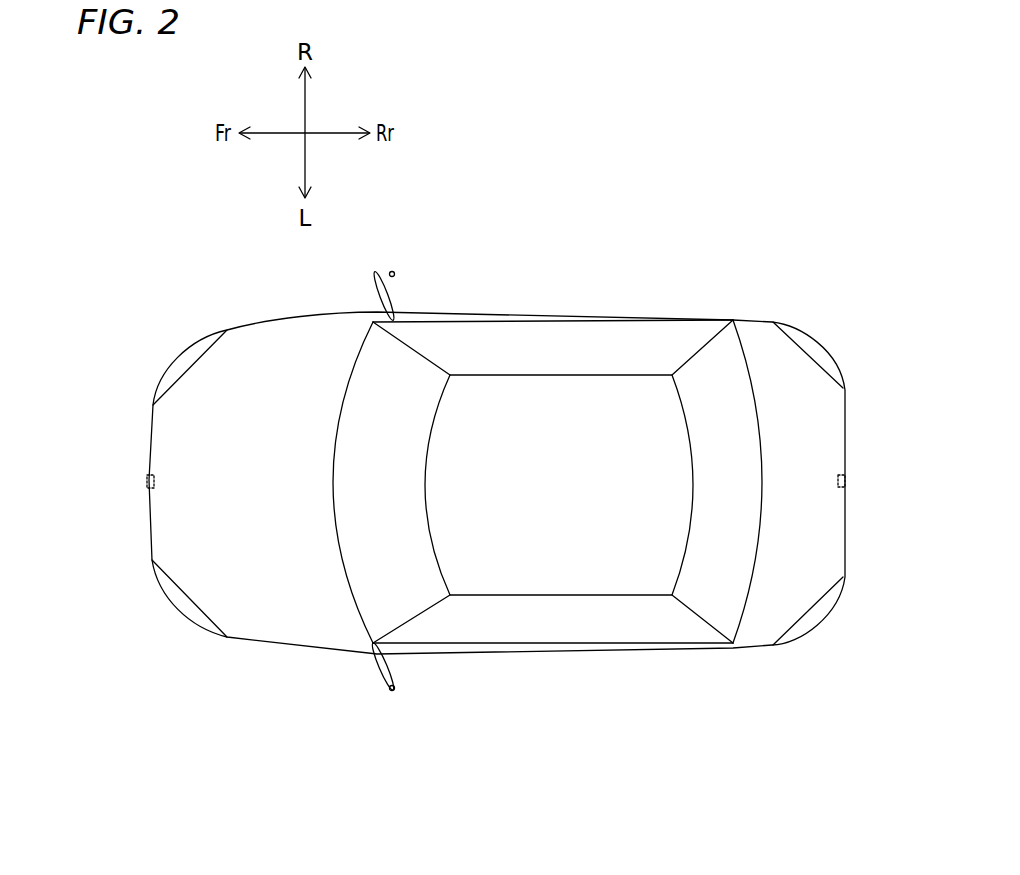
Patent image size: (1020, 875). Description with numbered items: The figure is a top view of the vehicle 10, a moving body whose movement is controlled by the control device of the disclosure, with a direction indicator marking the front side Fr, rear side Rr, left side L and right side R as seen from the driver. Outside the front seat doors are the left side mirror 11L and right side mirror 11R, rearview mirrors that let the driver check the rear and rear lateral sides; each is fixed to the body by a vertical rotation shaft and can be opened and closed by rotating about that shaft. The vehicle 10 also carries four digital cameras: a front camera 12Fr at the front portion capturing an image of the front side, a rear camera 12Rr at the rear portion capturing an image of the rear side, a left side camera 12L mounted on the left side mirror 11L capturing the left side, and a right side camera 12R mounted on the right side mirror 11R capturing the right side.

The vehicle 10 is at (648, 316).
The right side mirror 11R is at (375, 318).
The left side mirror 11L is at (378, 665).
The right side camera 12R is at (395, 272).
The left side camera 12L is at (395, 690).
The front camera 12Fr is at (148, 482).
The rear camera 12Rr is at (846, 481).